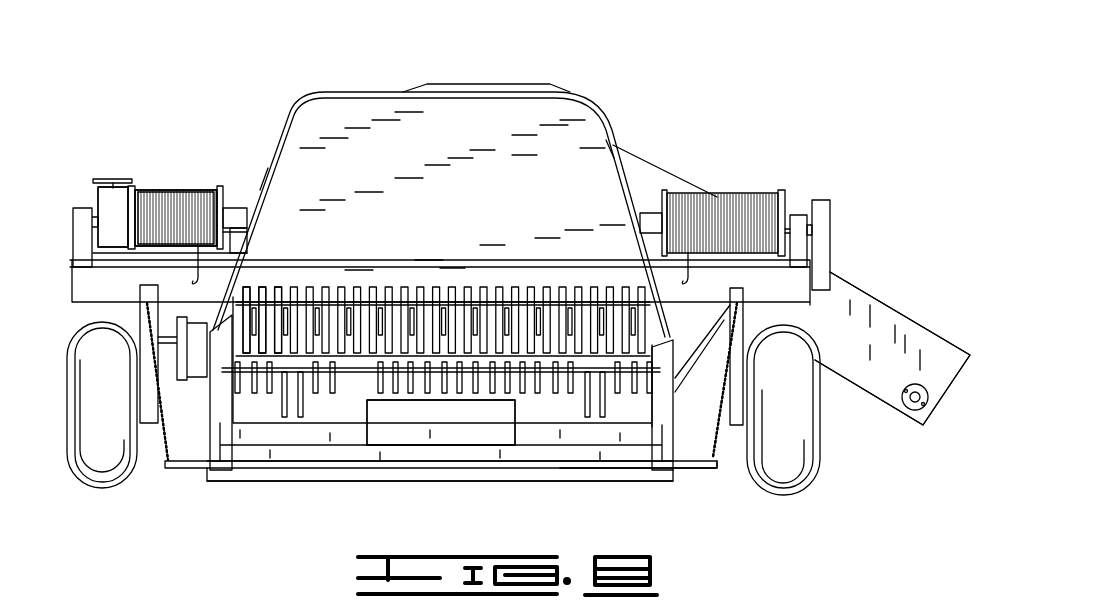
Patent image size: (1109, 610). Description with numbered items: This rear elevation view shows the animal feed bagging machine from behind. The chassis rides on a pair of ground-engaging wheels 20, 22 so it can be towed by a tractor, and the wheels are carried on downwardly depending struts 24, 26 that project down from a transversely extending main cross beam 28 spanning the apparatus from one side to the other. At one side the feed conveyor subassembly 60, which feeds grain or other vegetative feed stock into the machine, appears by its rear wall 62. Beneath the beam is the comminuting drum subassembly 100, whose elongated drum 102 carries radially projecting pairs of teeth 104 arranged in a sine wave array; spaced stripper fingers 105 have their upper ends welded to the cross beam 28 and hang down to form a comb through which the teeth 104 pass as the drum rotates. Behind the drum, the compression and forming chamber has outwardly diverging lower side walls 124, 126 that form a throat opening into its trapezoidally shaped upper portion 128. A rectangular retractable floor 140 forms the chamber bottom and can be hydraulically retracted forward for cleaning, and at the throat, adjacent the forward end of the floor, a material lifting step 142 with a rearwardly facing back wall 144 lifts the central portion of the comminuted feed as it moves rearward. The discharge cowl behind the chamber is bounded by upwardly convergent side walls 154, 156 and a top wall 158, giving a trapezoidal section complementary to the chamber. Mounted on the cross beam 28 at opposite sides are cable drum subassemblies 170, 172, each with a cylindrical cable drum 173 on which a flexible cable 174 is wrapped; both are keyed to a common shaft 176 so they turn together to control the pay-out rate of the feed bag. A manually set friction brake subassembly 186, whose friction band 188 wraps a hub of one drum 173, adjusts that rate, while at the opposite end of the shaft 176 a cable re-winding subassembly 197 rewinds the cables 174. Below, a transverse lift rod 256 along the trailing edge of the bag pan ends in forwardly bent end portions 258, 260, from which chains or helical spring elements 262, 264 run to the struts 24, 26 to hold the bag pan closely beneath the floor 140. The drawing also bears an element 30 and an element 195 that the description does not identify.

The ground-engaging wheel 20 is at (100, 462).
The ground-engaging wheel 22 is at (790, 460).
The strut 24 is at (147, 292).
The strut 26 is at (740, 300).
The main cross beam 28 is at (448, 280).
The hood assembly 30 is at (357, 72).
The feed conveyor subassembly 60 is at (876, 292).
The rear wall 62 is at (897, 342).
The comminuting drum subassembly 100 is at (343, 425).
The drum 102 is at (548, 368).
The teeth 104 is at (605, 405).
The stripper fingers 105 is at (278, 297).
The lower side wall 124 is at (223, 403).
The lower side wall 126 is at (665, 410).
The upper portion 128 is at (462, 108).
The retractable floor 140 is at (447, 452).
The material lifting step 142 is at (385, 430).
The back wall 144 is at (484, 425).
The side wall 154 is at (262, 182).
The side wall 156 is at (613, 145).
The top wall 158 is at (315, 91).
The cable drum subassembly 170 is at (175, 187).
The cable drum subassembly 172 is at (728, 190).
The cable drum 173 is at (128, 218).
The cable 174 is at (183, 210).
The shaft 176 is at (226, 210).
The friction brake subassembly 186 is at (126, 184).
The friction band 188 is at (119, 217).
The handle 195 is at (98, 180).
The cable re-winding subassembly 197 is at (830, 219).
The lift rod 256 is at (400, 467).
The forwardly bent end portion 258 is at (191, 468).
The forwardly bent end portion 260 is at (700, 478).
The chain or helical spring element 262 is at (160, 445).
The chain or helical spring element 264 is at (715, 445).